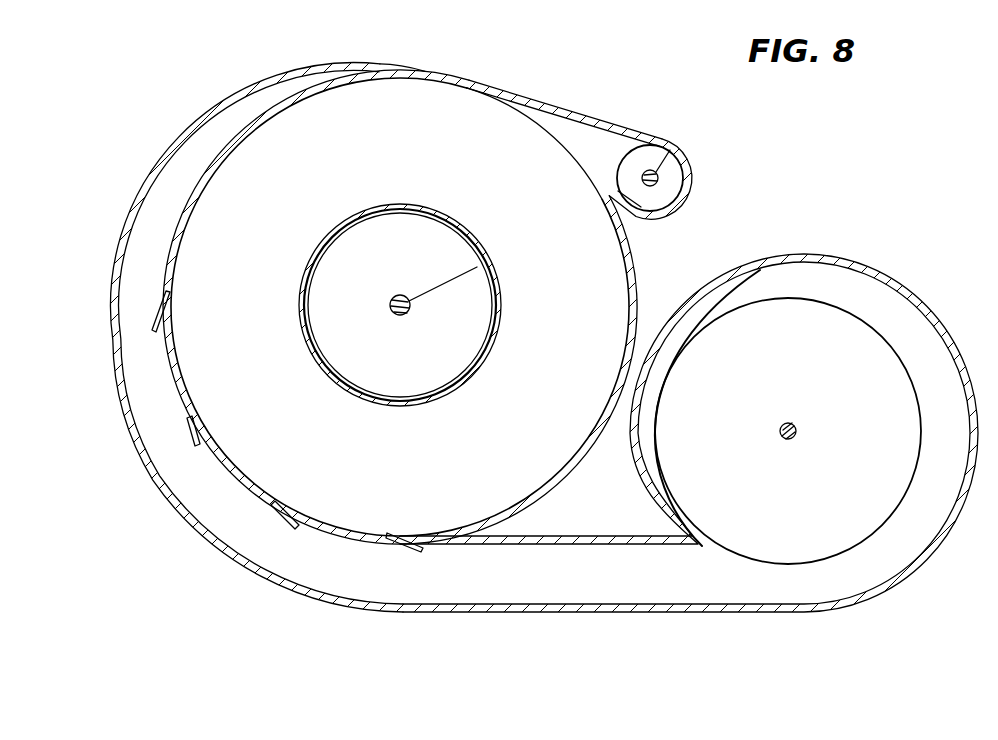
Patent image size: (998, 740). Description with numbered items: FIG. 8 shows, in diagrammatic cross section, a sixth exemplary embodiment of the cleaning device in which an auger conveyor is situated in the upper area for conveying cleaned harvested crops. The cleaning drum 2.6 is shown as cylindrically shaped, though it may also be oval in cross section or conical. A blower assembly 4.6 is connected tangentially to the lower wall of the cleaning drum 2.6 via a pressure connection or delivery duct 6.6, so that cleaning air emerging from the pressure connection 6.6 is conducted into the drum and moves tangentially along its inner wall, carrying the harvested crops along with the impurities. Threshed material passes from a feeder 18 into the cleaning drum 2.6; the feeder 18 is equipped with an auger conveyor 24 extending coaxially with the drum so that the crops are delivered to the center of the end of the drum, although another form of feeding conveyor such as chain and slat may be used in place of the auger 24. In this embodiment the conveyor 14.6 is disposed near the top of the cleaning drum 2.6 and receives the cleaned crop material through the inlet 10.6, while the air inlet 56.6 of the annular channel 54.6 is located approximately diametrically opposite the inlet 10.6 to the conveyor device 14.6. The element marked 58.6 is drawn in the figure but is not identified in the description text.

The cleaning drum 2.6 is at (648, 274).
The blower assembly 4.6 is at (920, 286).
The pressure connection 6.6 is at (610, 592).
The inlet to the conveyor device 10.6 is at (547, 131).
The conveyor 14.6 is at (702, 161).
The feeder 18 is at (384, 200).
The auger conveyor 24 is at (390, 273).
The annular channel 54.6 is at (163, 408).
The air inlet 56.6 is at (432, 577).
The belt layer end 58.6 is at (167, 320).